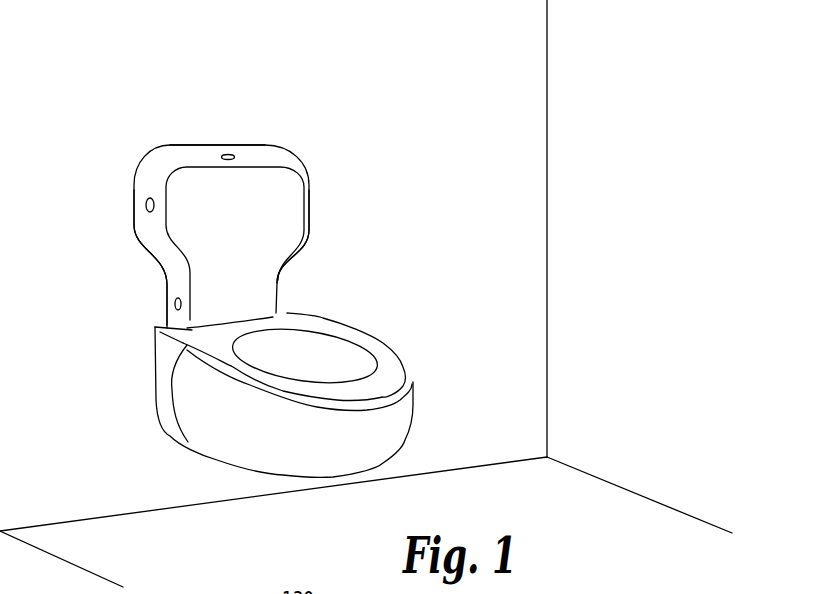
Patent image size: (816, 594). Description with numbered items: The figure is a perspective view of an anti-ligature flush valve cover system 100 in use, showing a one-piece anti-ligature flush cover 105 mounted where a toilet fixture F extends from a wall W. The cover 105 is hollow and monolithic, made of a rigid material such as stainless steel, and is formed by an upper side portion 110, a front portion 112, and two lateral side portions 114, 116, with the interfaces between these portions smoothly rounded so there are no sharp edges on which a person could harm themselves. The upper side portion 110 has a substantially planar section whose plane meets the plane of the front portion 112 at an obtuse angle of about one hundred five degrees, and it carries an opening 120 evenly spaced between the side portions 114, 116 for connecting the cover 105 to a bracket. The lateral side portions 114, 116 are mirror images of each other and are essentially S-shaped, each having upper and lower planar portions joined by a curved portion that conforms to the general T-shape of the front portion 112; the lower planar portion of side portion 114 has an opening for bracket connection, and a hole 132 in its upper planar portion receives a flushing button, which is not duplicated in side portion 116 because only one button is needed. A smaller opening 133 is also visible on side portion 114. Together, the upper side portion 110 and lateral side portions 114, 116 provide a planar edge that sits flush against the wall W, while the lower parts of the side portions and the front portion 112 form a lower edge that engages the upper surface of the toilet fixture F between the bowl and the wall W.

The system 100 is at (245, 110).
The one-piece anti-ligature flush cover 105 is at (313, 161).
The upper side portion 110 is at (192, 155).
The opening 120 is at (228, 153).
The front portion 112 is at (238, 262).
The lateral side portion 114 is at (153, 237).
The lateral side portion 116 is at (303, 242).
The hole 132 is at (174, 305).
The upper mounting opening 133 is at (146, 205).
The wall W is at (73, 409).
The toilet fixture F is at (217, 421).